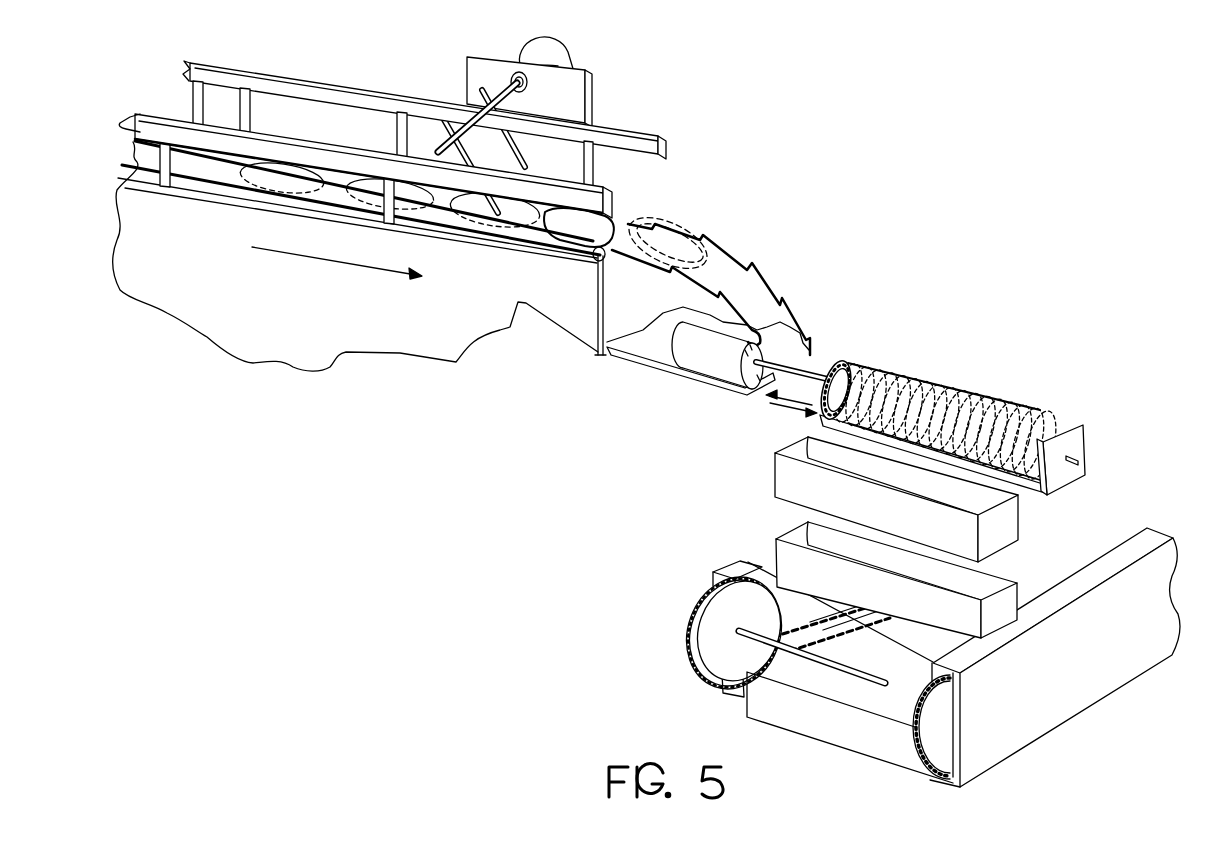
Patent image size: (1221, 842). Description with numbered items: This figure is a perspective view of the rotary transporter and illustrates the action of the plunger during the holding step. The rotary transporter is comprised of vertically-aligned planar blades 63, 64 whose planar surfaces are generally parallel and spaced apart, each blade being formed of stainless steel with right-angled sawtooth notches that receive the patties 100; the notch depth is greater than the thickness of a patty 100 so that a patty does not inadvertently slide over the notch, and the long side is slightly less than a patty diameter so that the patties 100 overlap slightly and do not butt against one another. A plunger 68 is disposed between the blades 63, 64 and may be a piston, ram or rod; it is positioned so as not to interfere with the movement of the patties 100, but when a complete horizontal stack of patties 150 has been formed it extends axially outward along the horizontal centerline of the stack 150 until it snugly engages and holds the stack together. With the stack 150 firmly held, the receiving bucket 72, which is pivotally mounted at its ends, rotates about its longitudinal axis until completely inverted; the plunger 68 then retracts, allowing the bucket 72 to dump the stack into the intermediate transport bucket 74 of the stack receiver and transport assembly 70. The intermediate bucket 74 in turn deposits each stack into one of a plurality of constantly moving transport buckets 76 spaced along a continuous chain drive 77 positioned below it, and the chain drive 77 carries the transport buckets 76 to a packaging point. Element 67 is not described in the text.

The planar blade 63 is at (613, 323).
The planar blade 64 is at (757, 295).
The cylinder 67 is at (710, 358).
The plunger 68 is at (832, 365).
The stack receiver and transport assembly 70 is at (1124, 710).
The receiving bucket 72 is at (1080, 442).
The intermediate transport bucket 74 is at (1010, 525).
The transport bucket 76 is at (787, 560).
The chain drive 77 is at (682, 642).
The patty 100 is at (668, 238).
The horizontal stack of patties 150 is at (963, 383).